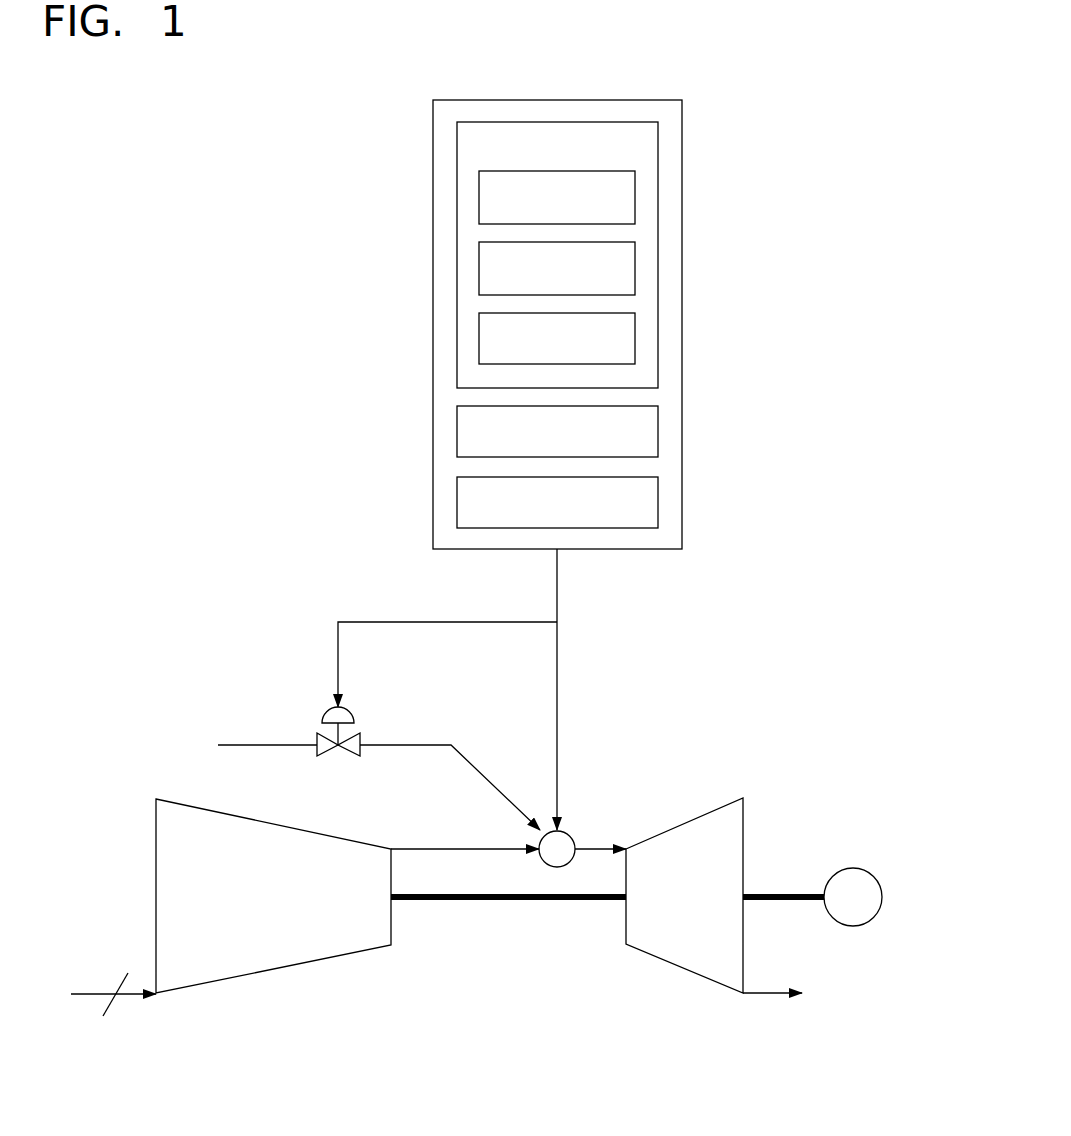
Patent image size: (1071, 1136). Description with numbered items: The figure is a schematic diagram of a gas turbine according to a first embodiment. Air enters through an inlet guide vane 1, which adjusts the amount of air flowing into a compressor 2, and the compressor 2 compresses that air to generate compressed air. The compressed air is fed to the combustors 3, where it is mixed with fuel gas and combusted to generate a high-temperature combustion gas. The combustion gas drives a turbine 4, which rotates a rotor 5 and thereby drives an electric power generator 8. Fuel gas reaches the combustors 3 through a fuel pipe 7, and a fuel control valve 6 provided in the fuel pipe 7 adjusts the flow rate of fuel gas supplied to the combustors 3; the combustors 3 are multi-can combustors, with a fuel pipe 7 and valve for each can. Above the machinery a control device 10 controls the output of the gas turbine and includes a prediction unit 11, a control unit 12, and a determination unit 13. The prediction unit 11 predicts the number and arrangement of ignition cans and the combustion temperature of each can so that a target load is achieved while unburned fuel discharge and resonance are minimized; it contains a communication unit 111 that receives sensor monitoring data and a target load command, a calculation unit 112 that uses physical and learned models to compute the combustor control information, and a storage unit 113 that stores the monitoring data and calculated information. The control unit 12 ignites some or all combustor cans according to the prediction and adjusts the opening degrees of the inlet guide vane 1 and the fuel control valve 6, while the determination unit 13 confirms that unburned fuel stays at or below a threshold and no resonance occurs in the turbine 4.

The inlet guide vane 1 is at (122, 981).
The compressor 2 is at (297, 983).
The combustors 3 is at (570, 836).
The turbine 4 is at (681, 826).
The rotor 5 is at (513, 903).
The fuel control valve 6 is at (323, 713).
The fuel pipe 7 is at (412, 745).
The electric power generator 8 is at (853, 868).
The control device 10 is at (616, 100).
The prediction unit 11 is at (457, 149).
The communication unit 111 is at (635, 196).
The calculation unit 112 is at (635, 265).
The storage unit 113 is at (635, 337).
The control unit 12 is at (658, 430).
The determination unit 13 is at (658, 500).